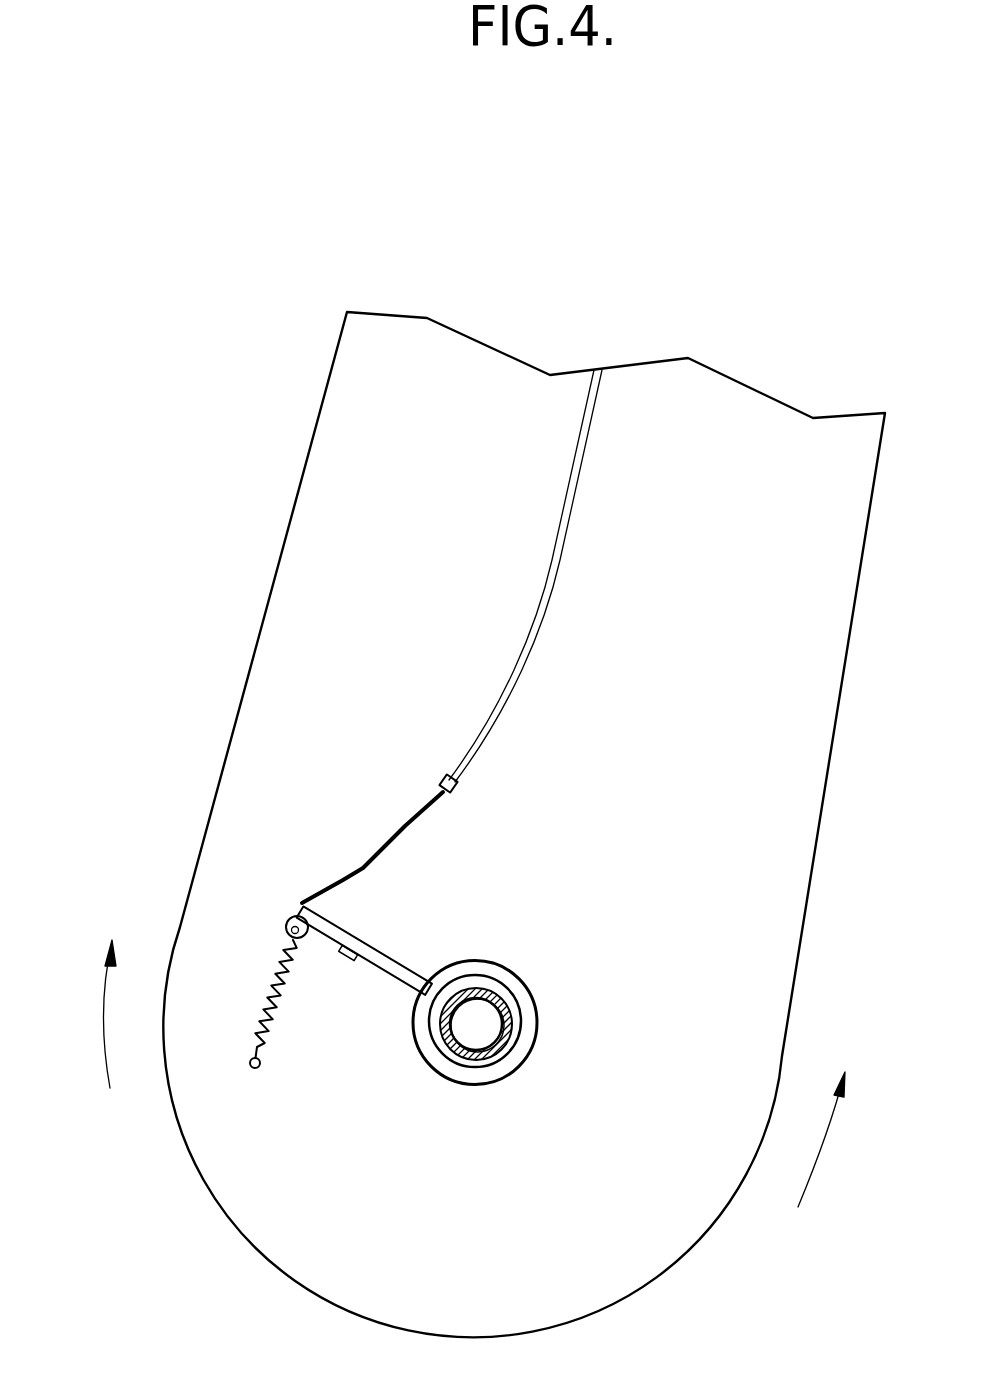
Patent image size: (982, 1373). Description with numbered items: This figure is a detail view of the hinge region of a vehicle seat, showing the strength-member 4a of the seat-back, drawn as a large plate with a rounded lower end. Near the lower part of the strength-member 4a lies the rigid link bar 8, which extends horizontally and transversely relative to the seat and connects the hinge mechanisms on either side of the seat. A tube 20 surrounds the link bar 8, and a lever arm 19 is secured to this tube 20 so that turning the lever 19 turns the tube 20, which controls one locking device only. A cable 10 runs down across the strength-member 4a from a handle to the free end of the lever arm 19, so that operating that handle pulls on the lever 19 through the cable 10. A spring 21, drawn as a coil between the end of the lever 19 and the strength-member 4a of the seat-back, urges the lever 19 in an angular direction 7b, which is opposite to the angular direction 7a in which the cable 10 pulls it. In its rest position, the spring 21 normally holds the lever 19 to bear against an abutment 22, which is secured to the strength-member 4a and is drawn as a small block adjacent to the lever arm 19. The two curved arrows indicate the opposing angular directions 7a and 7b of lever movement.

The strength-member of the seat-back 4a is at (758, 467).
The cable 10 is at (405, 825).
The lever arm 19 is at (342, 932).
The tube 20 is at (513, 983).
The link bar 8 is at (510, 1028).
The spring 21 is at (267, 992).
The abutment 22 is at (353, 958).
The angular direction 7a is at (105, 1046).
The angular direction 7b is at (823, 1157).